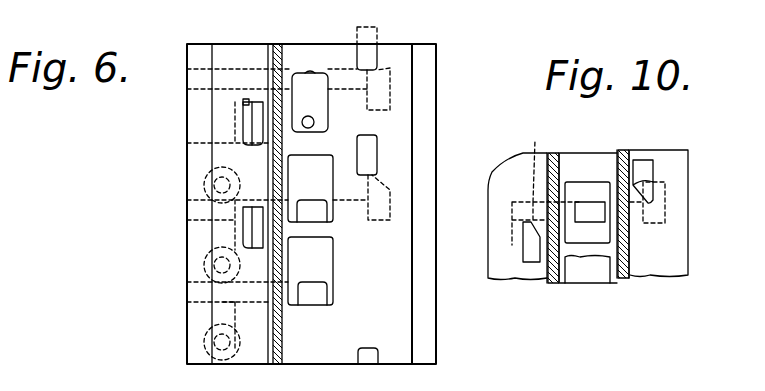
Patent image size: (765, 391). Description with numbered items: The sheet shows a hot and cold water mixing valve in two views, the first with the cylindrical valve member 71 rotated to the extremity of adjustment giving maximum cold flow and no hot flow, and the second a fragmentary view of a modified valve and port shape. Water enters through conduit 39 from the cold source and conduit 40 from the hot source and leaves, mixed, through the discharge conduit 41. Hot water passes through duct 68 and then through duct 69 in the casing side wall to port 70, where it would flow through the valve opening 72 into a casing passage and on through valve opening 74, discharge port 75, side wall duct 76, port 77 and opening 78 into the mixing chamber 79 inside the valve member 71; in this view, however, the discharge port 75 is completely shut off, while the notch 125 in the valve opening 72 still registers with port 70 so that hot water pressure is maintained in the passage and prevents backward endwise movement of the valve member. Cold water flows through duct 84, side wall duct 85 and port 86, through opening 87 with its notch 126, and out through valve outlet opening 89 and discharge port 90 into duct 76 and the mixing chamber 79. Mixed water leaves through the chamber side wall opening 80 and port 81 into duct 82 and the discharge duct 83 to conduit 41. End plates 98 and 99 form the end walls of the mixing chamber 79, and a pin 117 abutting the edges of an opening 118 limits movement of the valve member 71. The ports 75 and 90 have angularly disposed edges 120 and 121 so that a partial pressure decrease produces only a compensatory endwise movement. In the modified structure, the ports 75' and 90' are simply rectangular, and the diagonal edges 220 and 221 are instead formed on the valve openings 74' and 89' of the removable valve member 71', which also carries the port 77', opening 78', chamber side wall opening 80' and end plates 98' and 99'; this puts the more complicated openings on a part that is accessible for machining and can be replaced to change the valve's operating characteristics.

In FIG. 6, the conduit 39 is at (232, 185).
In FIG. 6, the conduit 40 is at (224, 352).
In FIG. 6, the discharge conduit 41 is at (212, 268).
In FIG. 6, the duct 68 is at (196, 338).
In FIG. 6, the duct 69 is at (240, 69).
In FIG. 6, the port 70 is at (390, 64).
In FIG. 6, the cylindrical valve member 71 is at (440, 285).
In FIG. 6, the valve opening 72 is at (380, 45).
In FIG. 6, the valve opening 74 is at (416, 150).
In FIG. 6, the discharge port 75 is at (415, 197).
In FIG. 6, the side wall duct 76 is at (357, 222).
In FIG. 6, the port 77 is at (312, 202).
In FIG. 6, the opening 78 is at (310, 188).
In FIG. 6, the mixing chamber 79 is at (330, 312).
In FIG. 6, the chamber side wall opening 80 is at (344, 291).
In FIG. 6, the port 81 is at (311, 305).
In FIG. 6, the duct 82 is at (224, 308).
In FIG. 6, the discharge duct 83 is at (200, 232).
In FIG. 6, the duct 84 is at (200, 183).
In FIG. 6, the side wall duct 85 is at (240, 128).
In FIG. 6, the port 86 is at (258, 108).
In FIG. 6, the opening 87 is at (258, 146).
In FIG. 6, the valve outlet opening 89 is at (299, 271).
In FIG. 6, the discharge port 90 is at (203, 227).
In FIG. 6, the end plate 98 is at (300, 367).
In FIG. 6, the end plate 99 is at (338, 204).
In FIG. 6, the pin 117 is at (306, 128).
In FIG. 6, the opening 118 is at (317, 72).
In FIG. 6, the angularly disposed edge 120 is at (384, 188).
In FIG. 6, the angularly disposed edge 121 is at (263, 248).
In FIG. 6, the notch 125 is at (373, 71).
In FIG. 6, the notch 126 is at (243, 101).
In FIG. 10, the valve member 71' is at (517, 244).
In FIG. 10, the valve opening 74' is at (665, 198).
In FIG. 10, the discharge port 75' is at (654, 221).
In FIG. 10, the port 77' is at (590, 222).
In FIG. 10, the opening 78' is at (587, 184).
In FIG. 10, the chamber side wall opening 80' is at (593, 233).
In FIG. 10, the valve outlet opening 89' is at (538, 269).
In FIG. 10, the discharge port 90' is at (546, 183).
In FIG. 10, the end plate 98' is at (568, 233).
In FIG. 10, the end plate 99' is at (640, 193).
In FIG. 10, the diagonal edge 220 is at (644, 183).
In FIG. 10, the diagonal edge 221 is at (523, 228).